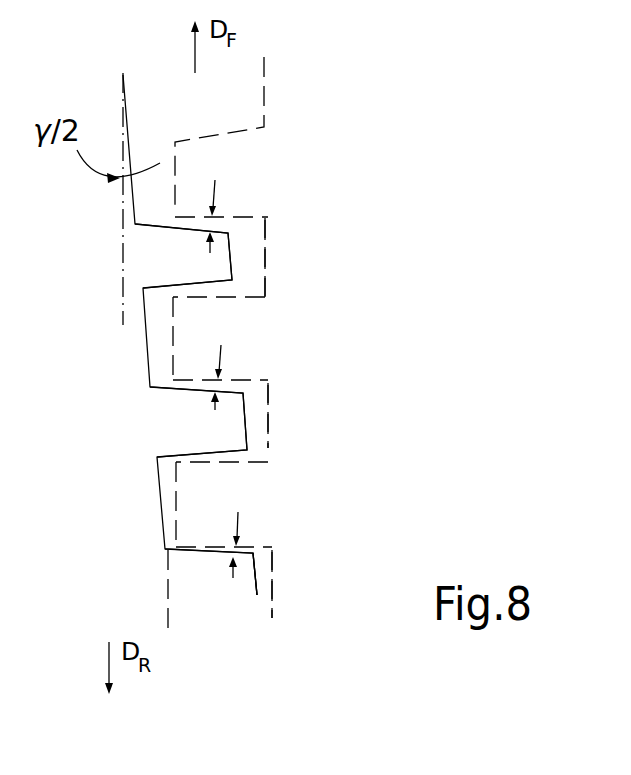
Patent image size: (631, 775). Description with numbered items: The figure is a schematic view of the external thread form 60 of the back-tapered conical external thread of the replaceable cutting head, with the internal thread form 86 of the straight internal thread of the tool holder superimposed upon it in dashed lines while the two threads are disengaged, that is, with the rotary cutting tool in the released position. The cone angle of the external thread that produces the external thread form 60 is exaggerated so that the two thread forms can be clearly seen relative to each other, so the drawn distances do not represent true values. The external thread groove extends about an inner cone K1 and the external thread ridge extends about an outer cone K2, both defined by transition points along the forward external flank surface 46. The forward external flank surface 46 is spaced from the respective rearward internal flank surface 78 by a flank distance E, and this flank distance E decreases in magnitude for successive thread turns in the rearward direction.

The external thread form 60 is at (126, 106).
The internal thread form 86 is at (264, 77).
The forward external flank surface 46 is at (163, 225).
The rearward internal flank surface 78 is at (238, 220).
The flank distance E is at (217, 197).
The inner cone K1 is at (172, 608).
The outer cone K2 is at (257, 595).